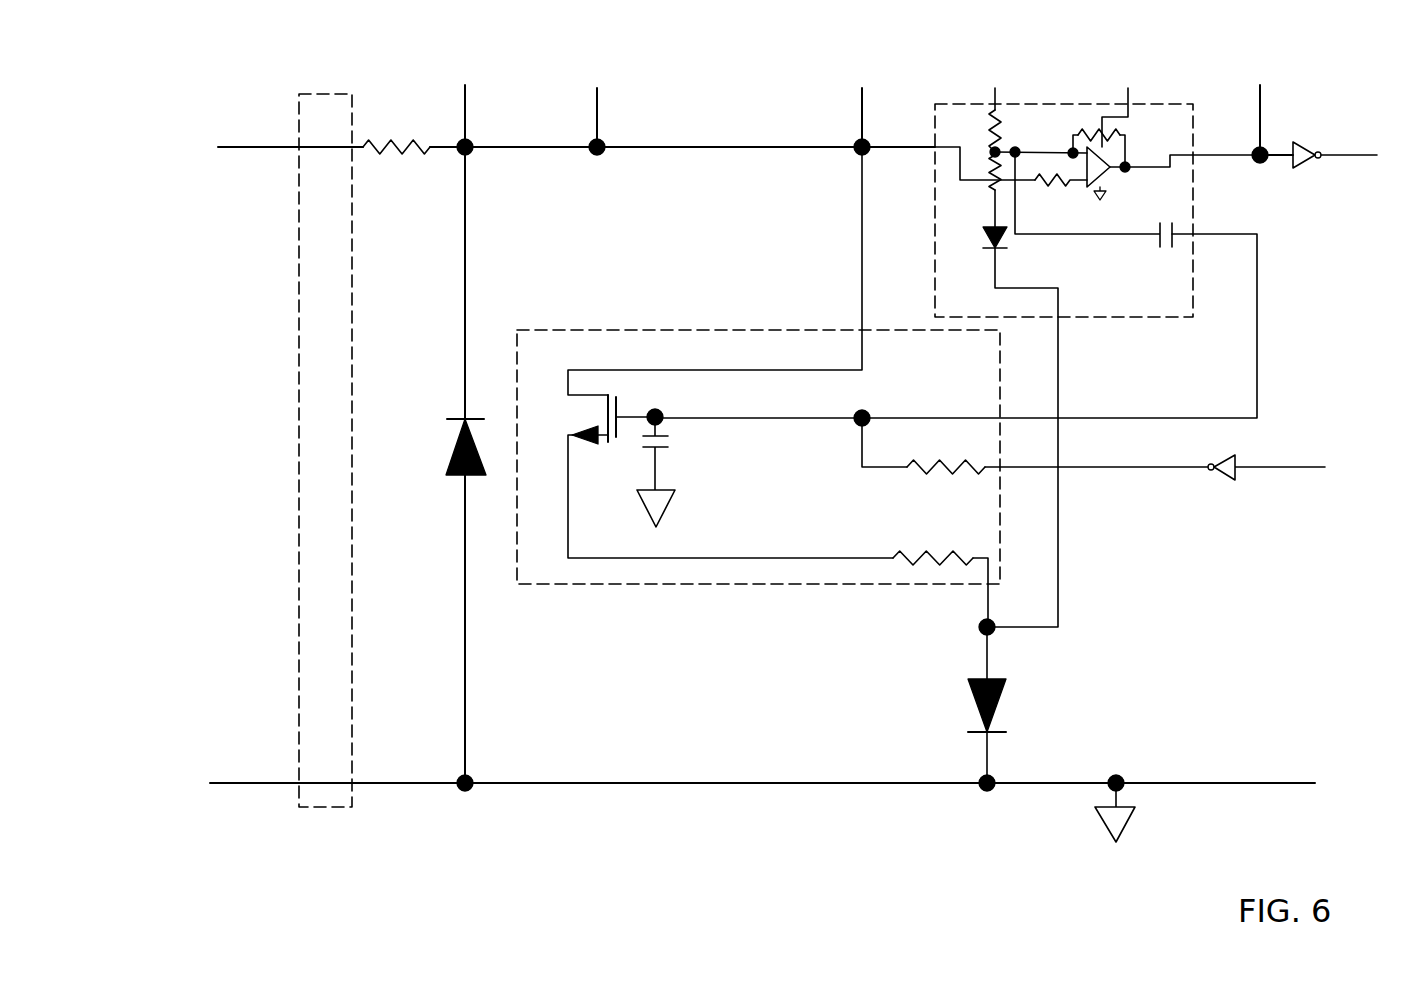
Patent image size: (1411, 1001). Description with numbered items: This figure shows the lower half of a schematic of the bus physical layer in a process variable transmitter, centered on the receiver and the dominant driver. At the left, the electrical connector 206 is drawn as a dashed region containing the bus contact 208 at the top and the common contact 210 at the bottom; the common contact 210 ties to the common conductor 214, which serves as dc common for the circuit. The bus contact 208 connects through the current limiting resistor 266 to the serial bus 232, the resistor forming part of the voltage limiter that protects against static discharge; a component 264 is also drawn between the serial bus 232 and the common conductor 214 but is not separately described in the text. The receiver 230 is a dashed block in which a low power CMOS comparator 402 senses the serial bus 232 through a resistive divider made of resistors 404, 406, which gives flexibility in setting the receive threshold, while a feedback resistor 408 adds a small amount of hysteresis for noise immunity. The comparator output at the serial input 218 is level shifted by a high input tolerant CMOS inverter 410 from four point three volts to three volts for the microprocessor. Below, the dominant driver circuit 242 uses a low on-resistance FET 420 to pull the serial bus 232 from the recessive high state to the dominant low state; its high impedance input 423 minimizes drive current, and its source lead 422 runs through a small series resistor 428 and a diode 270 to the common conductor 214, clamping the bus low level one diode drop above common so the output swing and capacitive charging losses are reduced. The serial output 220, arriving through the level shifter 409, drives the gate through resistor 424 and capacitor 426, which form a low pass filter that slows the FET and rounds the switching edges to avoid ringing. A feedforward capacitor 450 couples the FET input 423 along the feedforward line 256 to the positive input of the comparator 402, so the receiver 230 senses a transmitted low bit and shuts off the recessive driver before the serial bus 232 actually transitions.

The electrical connector 206 is at (299, 434).
The bus contact 208 is at (287, 147).
The common contact 210 is at (269, 784).
The common conductor 214 is at (620, 783).
The serial input 218 is at (1238, 150).
The serial output 220 is at (1085, 469).
The receiver circuit 230 is at (1193, 190).
The serial bus 232 is at (520, 149).
The dominant driver circuit 242 is at (585, 330).
The feedforward line 256 is at (1257, 318).
The diode 264 is at (451, 441).
The current limiting resistor 266 is at (380, 153).
The diode 270 is at (1005, 700).
The low power CMOS comparator 402 is at (1113, 176).
The resistive divider resistor 404 is at (992, 128).
The resistive divider resistor 406 is at (990, 188).
The feedback resistor 408 is at (1112, 140).
The level shifter 409 is at (1222, 485).
The CMOS inverter 410 is at (1303, 170).
The FET 420 is at (606, 418).
The source lead 422 is at (575, 438).
The high impedance input 423 is at (622, 412).
The resistor 424 is at (930, 475).
The capacitor 426 is at (672, 438).
The series resistor 428 is at (950, 556).
The feedforward capacitor 450 is at (1157, 240).